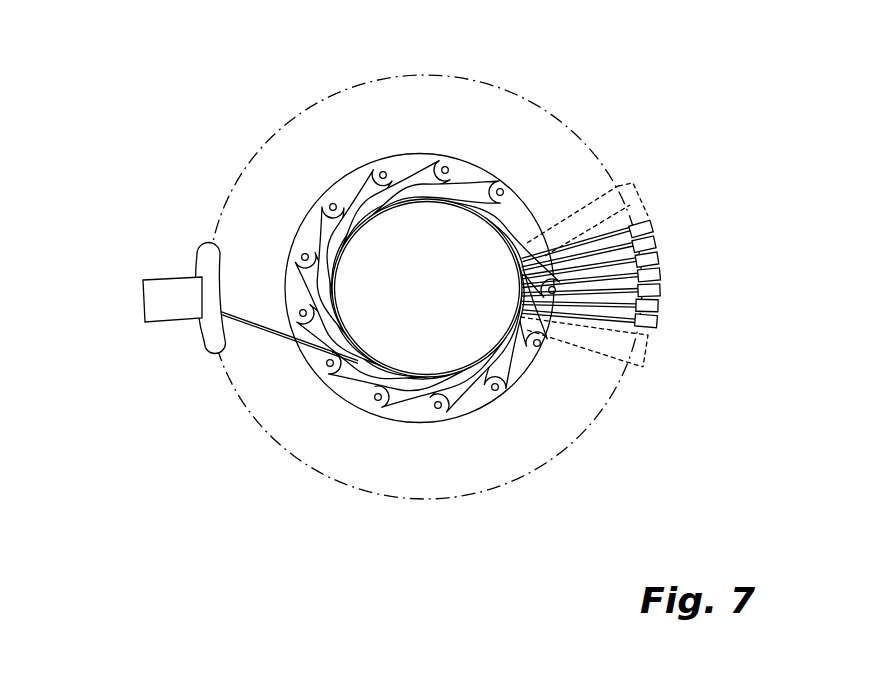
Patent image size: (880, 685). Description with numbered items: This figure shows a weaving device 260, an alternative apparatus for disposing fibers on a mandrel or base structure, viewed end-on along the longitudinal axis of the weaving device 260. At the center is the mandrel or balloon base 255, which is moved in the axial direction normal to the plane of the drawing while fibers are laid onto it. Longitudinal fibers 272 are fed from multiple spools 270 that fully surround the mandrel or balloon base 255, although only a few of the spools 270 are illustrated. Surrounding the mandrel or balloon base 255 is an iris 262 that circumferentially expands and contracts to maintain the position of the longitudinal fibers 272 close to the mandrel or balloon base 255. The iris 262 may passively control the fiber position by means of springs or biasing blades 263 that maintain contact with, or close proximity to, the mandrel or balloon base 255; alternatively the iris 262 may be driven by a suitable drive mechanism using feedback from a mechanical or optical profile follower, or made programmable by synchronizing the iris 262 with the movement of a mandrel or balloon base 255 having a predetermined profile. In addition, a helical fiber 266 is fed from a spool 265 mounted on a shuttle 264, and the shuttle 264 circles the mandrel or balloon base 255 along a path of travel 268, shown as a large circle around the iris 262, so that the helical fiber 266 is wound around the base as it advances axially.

The mandrel or balloon base 255 is at (374, 210).
The weaving device 260 is at (639, 315).
The iris 262 is at (547, 352).
The biasing blades 263 is at (496, 395).
The shuttle 264 is at (196, 336).
The spool 265 is at (143, 300).
The helical fiber 266 is at (305, 348).
The path of travel 268 is at (327, 478).
The spools 270 is at (654, 228).
The longitudinal fibers 272 is at (472, 212).